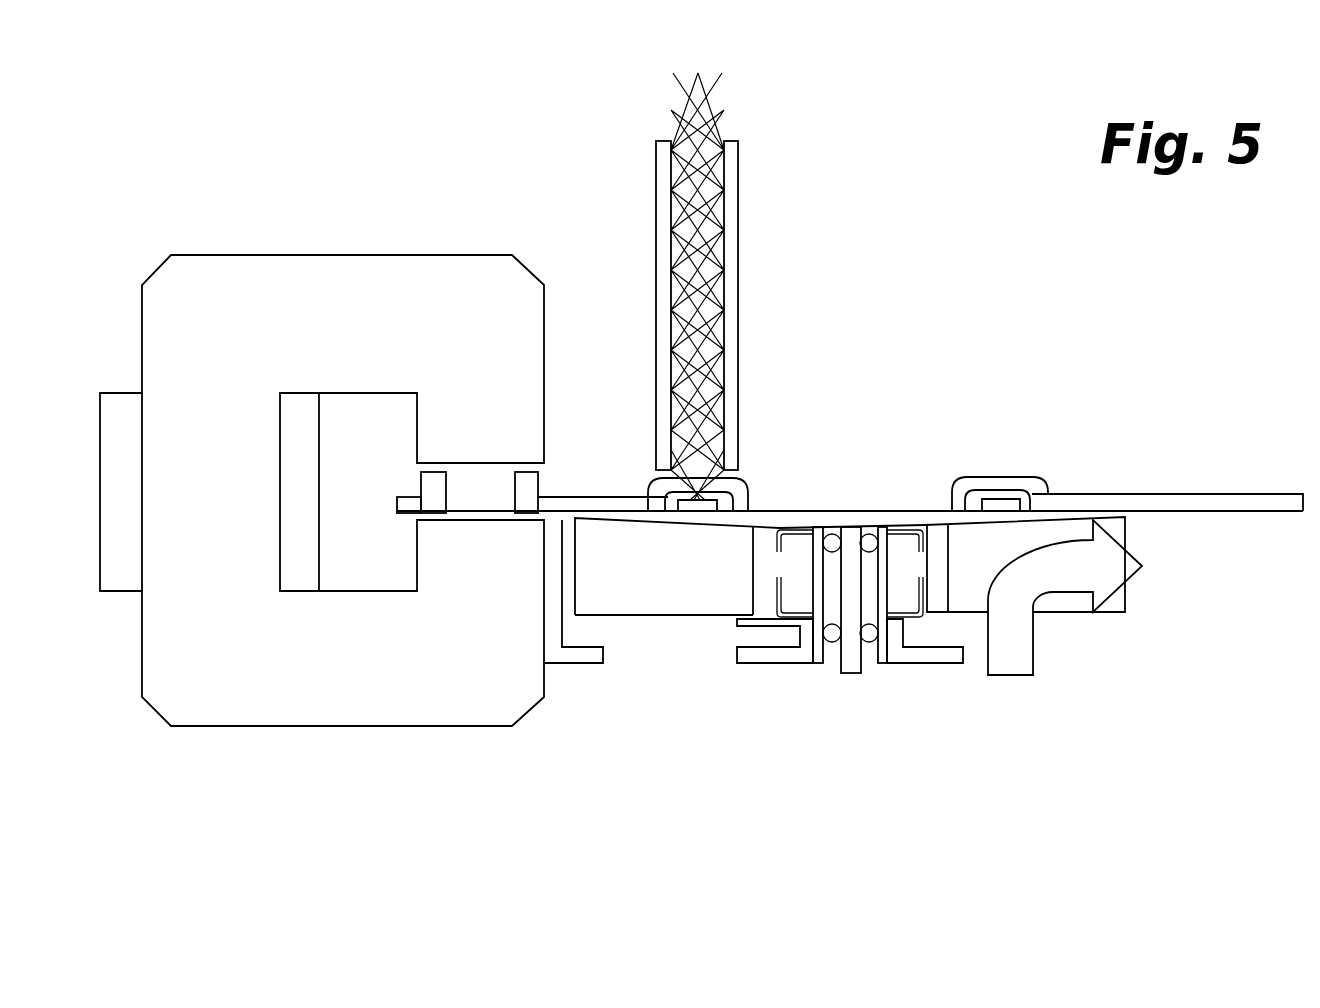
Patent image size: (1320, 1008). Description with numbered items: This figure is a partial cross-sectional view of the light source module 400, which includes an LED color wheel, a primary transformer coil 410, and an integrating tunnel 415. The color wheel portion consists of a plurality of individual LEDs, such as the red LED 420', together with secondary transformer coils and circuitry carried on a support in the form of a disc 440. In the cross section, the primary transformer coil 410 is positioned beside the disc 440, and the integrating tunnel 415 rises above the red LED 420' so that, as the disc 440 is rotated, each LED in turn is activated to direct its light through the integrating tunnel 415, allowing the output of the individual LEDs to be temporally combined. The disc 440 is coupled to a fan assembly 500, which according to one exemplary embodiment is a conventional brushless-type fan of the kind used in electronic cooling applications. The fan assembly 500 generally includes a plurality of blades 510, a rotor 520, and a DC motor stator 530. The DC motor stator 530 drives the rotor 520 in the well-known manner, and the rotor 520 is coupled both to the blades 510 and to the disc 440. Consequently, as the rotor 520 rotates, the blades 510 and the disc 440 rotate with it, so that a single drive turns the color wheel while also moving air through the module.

The light source module 400 is at (560, 152).
The primary transformer coil 410 is at (238, 514).
The integrating tunnel 415 is at (733, 187).
The red LED 420' is at (769, 395).
The disc 440 is at (775, 520).
The fan assembly 500 is at (882, 742).
The blades 510 is at (1058, 613).
The rotor 520 is at (850, 677).
The DC motor stator 530 is at (766, 625).